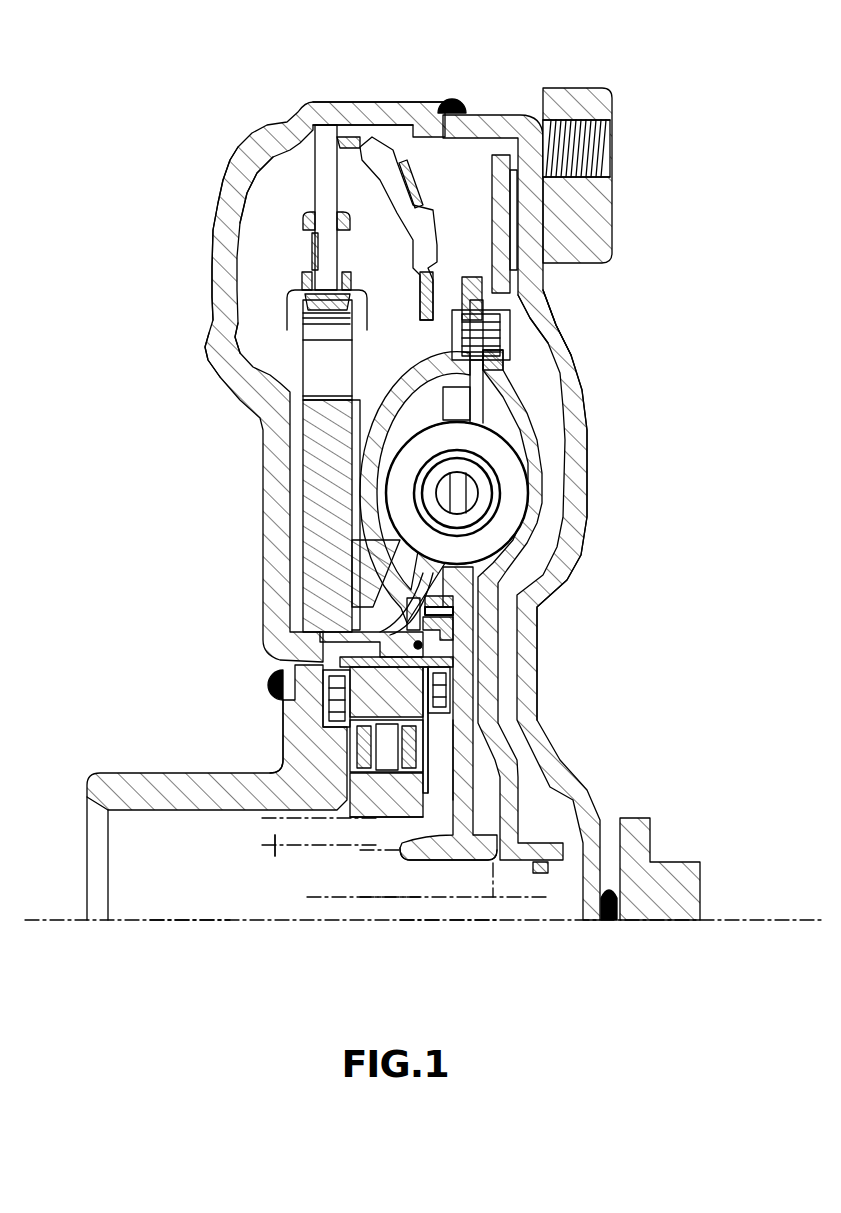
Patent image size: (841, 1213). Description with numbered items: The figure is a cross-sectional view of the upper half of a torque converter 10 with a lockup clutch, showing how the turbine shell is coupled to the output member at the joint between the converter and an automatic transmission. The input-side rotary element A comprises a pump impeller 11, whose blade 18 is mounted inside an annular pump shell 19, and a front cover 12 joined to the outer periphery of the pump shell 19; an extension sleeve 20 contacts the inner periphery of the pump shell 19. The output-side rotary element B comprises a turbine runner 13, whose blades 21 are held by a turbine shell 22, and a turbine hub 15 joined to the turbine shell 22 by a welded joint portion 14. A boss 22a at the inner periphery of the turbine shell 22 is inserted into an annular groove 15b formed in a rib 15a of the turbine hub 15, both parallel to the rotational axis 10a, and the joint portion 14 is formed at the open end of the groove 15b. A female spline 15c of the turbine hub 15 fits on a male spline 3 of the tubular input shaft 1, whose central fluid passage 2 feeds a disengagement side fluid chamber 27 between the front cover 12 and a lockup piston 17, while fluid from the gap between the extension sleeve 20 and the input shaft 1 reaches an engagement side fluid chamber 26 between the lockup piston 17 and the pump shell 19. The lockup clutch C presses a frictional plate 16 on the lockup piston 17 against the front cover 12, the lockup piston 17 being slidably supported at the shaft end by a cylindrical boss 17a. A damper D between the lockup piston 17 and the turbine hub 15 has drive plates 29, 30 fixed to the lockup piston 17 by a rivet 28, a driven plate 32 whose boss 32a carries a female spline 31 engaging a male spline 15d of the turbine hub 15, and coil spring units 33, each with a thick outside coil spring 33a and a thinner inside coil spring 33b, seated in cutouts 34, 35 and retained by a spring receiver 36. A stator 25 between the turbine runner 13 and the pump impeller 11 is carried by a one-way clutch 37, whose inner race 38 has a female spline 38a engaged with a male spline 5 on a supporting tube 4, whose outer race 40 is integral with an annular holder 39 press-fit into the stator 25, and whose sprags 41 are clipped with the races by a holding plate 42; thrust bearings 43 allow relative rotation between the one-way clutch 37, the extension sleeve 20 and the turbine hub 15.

The input shaft 1 is at (412, 885).
The central fluid passage 2 is at (466, 910).
The male spline 3 is at (390, 890).
The supporting tube 4 is at (278, 840).
The male spline 5 is at (330, 800).
The torque converter 10 is at (633, 72).
The rotational axis 10a is at (200, 925).
The pump impeller 11 is at (222, 205).
The front cover 12 is at (578, 420).
The turbine runner 13 is at (403, 150).
The joint portion 14 is at (423, 645).
The turbine hub 15 is at (460, 817).
The rib 15a is at (320, 633).
The annular groove 15b is at (463, 637).
The female spline 15c is at (450, 862).
The male spline 15d is at (472, 595).
The frictional plate 16 is at (517, 222).
The lockup piston 17 is at (495, 287).
The cylindrical boss 17a is at (600, 842).
The blade 18 is at (262, 267).
The pump shell 19 is at (217, 352).
The extension sleeve 20 is at (143, 793).
The blades 21 is at (392, 198).
The turbine shell 22 is at (366, 480).
The boss 22a is at (440, 656).
The stator 25 is at (317, 387).
The engagement side fluid chamber 26 is at (378, 455).
The disengagement side fluid chamber 27 is at (547, 367).
The rivet 28 is at (493, 332).
The drive plate 29 is at (462, 290).
The drive plate 30 is at (477, 298).
The female spline 31 is at (467, 610).
The driven plate 32 is at (508, 553).
The boss 32a is at (395, 613).
The coil spring units 33 is at (533, 510).
The outside coil spring 33a is at (510, 465).
The inside coil spring 33b is at (488, 494).
The cutout 34 is at (390, 433).
The cutout 35 is at (437, 493).
The spring receiver 36 is at (395, 383).
The one-way clutch 37 is at (445, 742).
The inner race 38 is at (480, 795).
The female spline 38a is at (372, 820).
The annular holder 39 is at (333, 652).
The outer race 40 is at (282, 683).
The sprags 41 is at (380, 747).
The holding plate 42 is at (364, 684).
The thrust bearings 43 is at (340, 697).
The input-side rotary element A is at (420, 98).
The output-side rotary element B is at (480, 260).
The lockup clutch C is at (517, 373).
The damper D is at (503, 425).